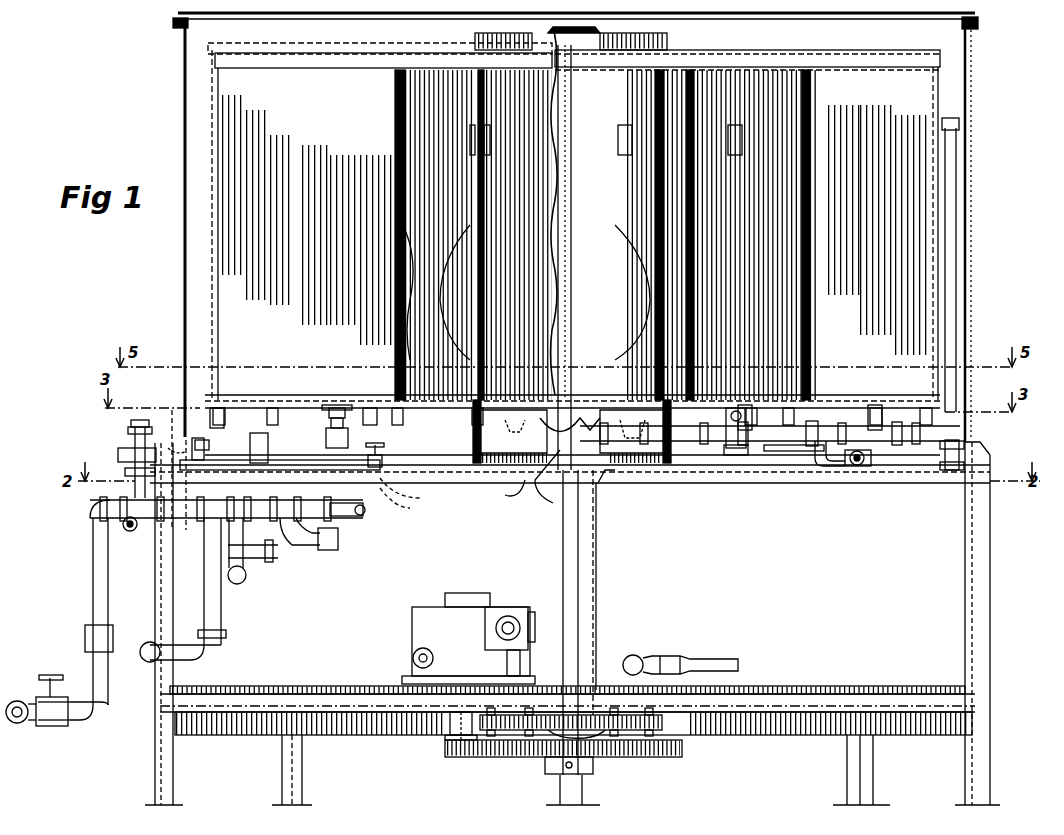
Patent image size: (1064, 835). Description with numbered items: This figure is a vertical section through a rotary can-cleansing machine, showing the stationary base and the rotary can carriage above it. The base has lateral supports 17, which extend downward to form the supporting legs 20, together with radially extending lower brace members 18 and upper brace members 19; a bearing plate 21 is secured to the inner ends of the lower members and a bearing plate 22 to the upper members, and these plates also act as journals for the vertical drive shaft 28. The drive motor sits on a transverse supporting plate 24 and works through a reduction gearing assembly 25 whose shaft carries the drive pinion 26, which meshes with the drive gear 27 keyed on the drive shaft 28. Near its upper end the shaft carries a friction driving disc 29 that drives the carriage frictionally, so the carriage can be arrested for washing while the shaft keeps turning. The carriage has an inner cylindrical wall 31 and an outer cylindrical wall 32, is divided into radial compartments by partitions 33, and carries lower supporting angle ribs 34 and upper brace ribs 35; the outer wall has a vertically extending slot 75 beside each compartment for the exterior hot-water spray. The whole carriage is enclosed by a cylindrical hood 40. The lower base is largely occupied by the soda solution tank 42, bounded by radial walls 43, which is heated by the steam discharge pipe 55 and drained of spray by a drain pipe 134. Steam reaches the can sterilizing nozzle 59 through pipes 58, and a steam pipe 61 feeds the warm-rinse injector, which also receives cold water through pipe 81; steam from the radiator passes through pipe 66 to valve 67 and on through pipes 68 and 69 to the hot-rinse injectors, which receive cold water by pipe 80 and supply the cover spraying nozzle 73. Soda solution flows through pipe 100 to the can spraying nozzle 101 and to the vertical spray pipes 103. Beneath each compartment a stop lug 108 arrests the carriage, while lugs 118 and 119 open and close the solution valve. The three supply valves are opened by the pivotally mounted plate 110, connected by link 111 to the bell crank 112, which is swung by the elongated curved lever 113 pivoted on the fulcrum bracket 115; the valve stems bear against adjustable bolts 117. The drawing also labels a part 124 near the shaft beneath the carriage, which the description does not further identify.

The lateral supports 17 is at (990, 598).
The lower brace members 18 is at (384, 700).
The upper brace members 19 is at (482, 478).
The supporting legs 20 is at (164, 772).
The bearing plate 21 is at (660, 740).
The bearing plate 22 is at (612, 483).
The transverse supporting plate 24 is at (336, 686).
The reduction gearing assembly 25 is at (440, 605).
The drive pinion 26 is at (455, 757).
The drive gear 27 is at (640, 760).
The drive shaft 28 is at (552, 372).
The friction driving disc 29 is at (572, 431).
The inner cylindrical wall 31 is at (483, 107).
The outer cylindrical wall 32 is at (395, 100).
The radially extending partitions 33 is at (972, 197).
The supporting angle ribs 34 is at (215, 400).
The upper brace ribs 35 is at (370, 55).
The cylindrical hood 40 is at (184, 68).
The soda solution tank 42 is at (781, 585).
The radial walls 43 is at (598, 551).
The steam discharge pipe 55 is at (702, 653).
The pipes 58 is at (260, 555).
The can sterilizing steam discharge nozzle 59 is at (328, 418).
The steam pipe 61 is at (326, 535).
The pipe 66 is at (93, 573).
The valve 67 is at (135, 530).
The pipe 68 is at (212, 597).
The pipe 69 is at (178, 645).
The cover spraying nozzle 73 is at (533, 212).
The vertically extending slot 75 is at (652, 316).
The pipe 80 is at (235, 530).
The pipe 81 is at (358, 516).
The pipe 100 is at (838, 470).
The can spraying nozzle 101 is at (770, 437).
The vertically extending spray pipes 103 is at (958, 349).
The stop lug 108 is at (962, 423).
The pivotally mounted plate 110 is at (130, 429).
The link 111 is at (118, 455).
The bell crank 112 is at (226, 502).
The elongated curved lever 113 is at (212, 440).
The fulcrum bracket 115 is at (262, 445).
The adjustable bolts 117 is at (146, 420).
The lug 118 is at (728, 436).
The closing lug 119 is at (726, 428).
The bearing 124 is at (672, 500).
The drain pipe 134 is at (410, 498).